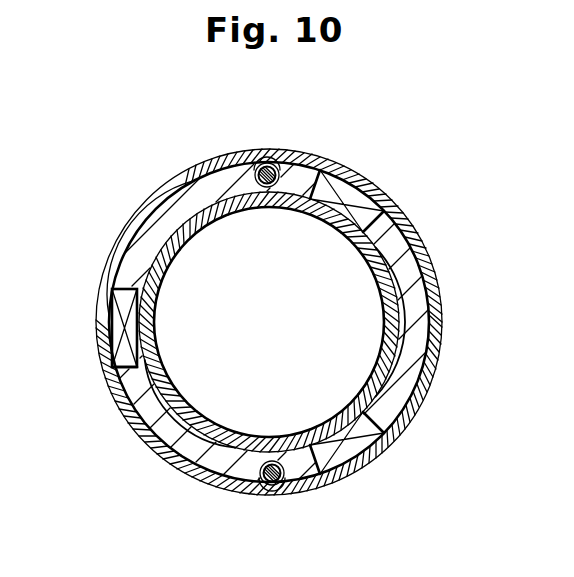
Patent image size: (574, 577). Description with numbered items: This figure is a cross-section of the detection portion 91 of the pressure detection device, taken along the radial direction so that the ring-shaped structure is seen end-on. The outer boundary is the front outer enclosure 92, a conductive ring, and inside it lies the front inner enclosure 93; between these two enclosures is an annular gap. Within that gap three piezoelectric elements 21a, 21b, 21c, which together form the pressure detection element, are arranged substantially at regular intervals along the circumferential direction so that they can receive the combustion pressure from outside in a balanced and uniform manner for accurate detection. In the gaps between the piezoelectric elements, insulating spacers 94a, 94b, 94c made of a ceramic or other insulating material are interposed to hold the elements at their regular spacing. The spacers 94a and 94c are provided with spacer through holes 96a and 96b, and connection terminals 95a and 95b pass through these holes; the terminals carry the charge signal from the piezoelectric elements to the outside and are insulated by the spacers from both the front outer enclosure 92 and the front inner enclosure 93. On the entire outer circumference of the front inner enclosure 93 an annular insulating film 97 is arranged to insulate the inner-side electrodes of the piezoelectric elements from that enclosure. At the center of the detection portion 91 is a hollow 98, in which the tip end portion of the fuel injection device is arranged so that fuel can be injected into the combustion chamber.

The detection portion 91 is at (404, 157).
The front outer enclosure 92 is at (192, 183).
The front inner enclosure 93 is at (166, 240).
The spacer 94a is at (122, 275).
The spacer 94b is at (408, 320).
The spacer 94c is at (166, 452).
The connection terminal 95a is at (275, 151).
The connection terminal 95b is at (262, 483).
The spacer through hole 96a is at (256, 155).
The spacer through hole 96b is at (288, 485).
The annular insulating film 97 is at (110, 349).
The hollow 98 is at (320, 352).
The piezoelectric element 21a is at (387, 200).
The piezoelectric element 21b is at (386, 447).
The piezoelectric element 21c is at (120, 383).